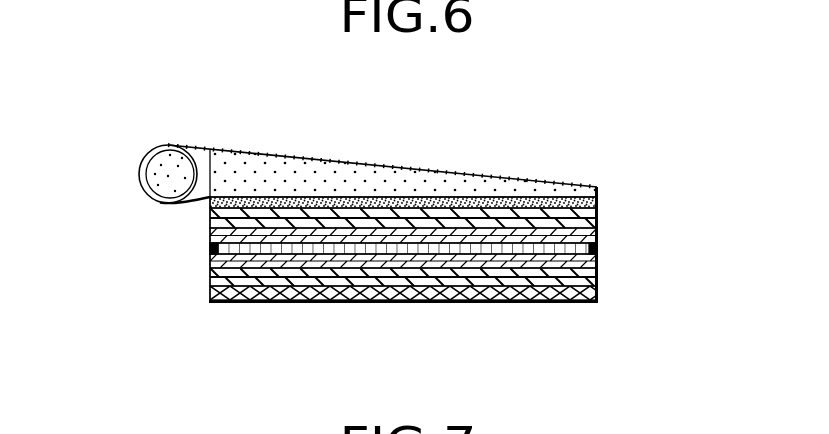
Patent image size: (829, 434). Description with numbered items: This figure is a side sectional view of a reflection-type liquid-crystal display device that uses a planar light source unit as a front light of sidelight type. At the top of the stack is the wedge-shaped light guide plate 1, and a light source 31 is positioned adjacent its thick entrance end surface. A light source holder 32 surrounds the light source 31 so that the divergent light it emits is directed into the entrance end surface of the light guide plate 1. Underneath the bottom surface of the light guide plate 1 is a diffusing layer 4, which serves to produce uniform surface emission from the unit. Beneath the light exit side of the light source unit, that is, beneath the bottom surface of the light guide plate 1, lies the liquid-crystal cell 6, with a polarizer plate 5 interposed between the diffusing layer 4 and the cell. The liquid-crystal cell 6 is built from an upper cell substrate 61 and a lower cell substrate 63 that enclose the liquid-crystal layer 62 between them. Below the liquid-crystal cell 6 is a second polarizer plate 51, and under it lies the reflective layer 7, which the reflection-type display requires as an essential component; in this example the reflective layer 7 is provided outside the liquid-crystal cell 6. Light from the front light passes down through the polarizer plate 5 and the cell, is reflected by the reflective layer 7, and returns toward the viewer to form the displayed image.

The light guide plate 1 is at (440, 178).
The light source 31 is at (160, 163).
The light source holder 32 is at (150, 197).
The diffusing layer 4 is at (600, 200).
The polarizer plate 5 is at (597, 218).
The liquid-crystal cell 6 is at (475, 264).
The cell substrate 61 is at (597, 235).
The liquid-crystal layer 62 is at (597, 247).
The cell substrate 63 is at (447, 282).
The polarizer plate 51 is at (597, 278).
The reflective layer 7 is at (585, 303).